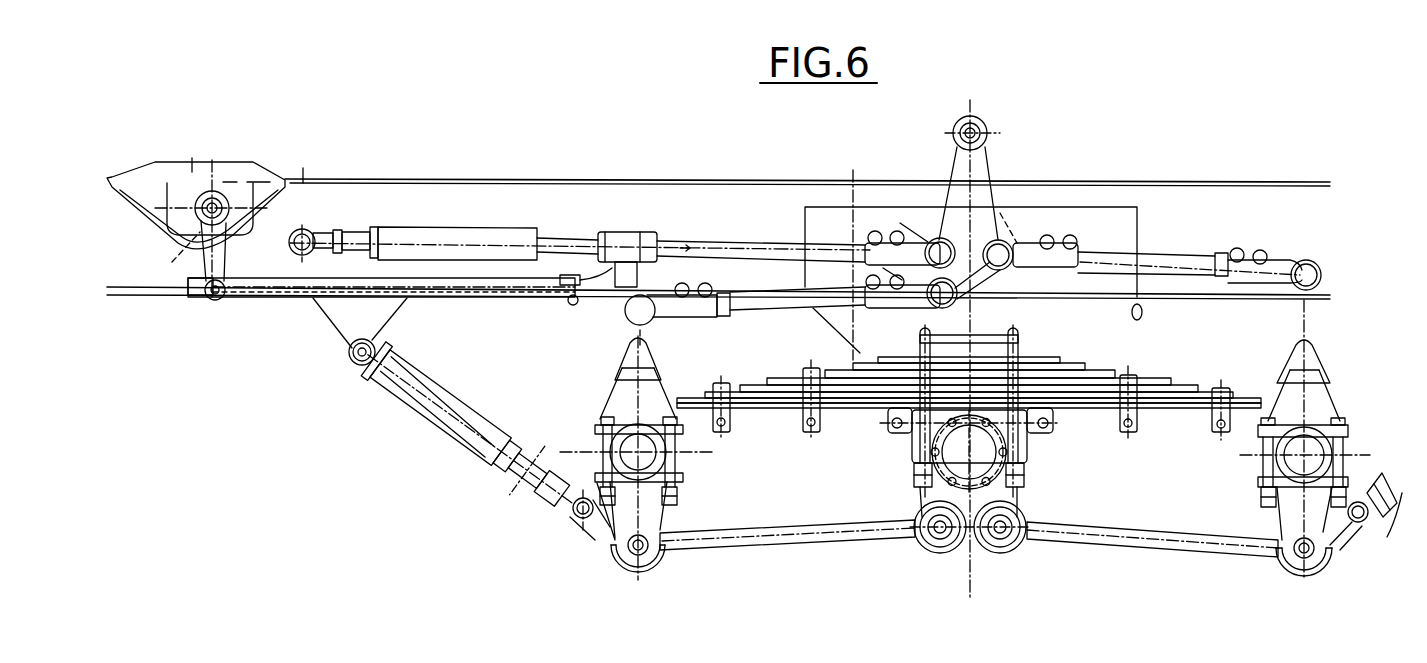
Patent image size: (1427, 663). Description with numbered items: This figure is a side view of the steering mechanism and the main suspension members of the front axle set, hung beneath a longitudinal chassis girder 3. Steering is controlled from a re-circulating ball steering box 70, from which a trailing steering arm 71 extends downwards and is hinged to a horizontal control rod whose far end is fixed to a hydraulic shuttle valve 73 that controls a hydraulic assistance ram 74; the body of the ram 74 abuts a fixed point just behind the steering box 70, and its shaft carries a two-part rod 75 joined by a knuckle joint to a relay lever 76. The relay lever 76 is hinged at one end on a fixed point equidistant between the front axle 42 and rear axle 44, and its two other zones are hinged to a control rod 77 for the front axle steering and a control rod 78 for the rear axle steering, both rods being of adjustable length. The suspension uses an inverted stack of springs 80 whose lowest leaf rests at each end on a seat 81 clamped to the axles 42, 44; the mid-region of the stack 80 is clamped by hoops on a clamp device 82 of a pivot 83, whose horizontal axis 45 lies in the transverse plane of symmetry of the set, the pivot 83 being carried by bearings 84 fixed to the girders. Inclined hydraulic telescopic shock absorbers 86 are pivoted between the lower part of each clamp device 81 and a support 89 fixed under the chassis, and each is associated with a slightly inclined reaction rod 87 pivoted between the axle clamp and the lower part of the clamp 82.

The longitudinal chassis girder 3 is at (693, 193).
The re-circulating ball steering box 70 is at (208, 180).
The trailing steering arm 71 is at (203, 243).
The hydraulic shuttle valve 73 is at (623, 235).
The hydraulic assistance ram 74 is at (443, 232).
The rod 75 is at (742, 248).
The relay lever 76 is at (983, 200).
The control rod 77 is at (780, 306).
The control rod 78 is at (1103, 265).
The stack of springs 80 is at (1106, 364).
The seat 81 is at (630, 397).
The front axle 42 is at (628, 448).
The rear axle 44 is at (1295, 457).
The pivot 83 is at (957, 445).
The axis 45 is at (968, 452).
The clamp device 82 is at (1025, 438).
The bearing 84 is at (850, 325).
The hydraulic telescopic shock absorber 86 is at (493, 455).
The reaction rod 87 is at (835, 540).
The support 89 is at (382, 327).